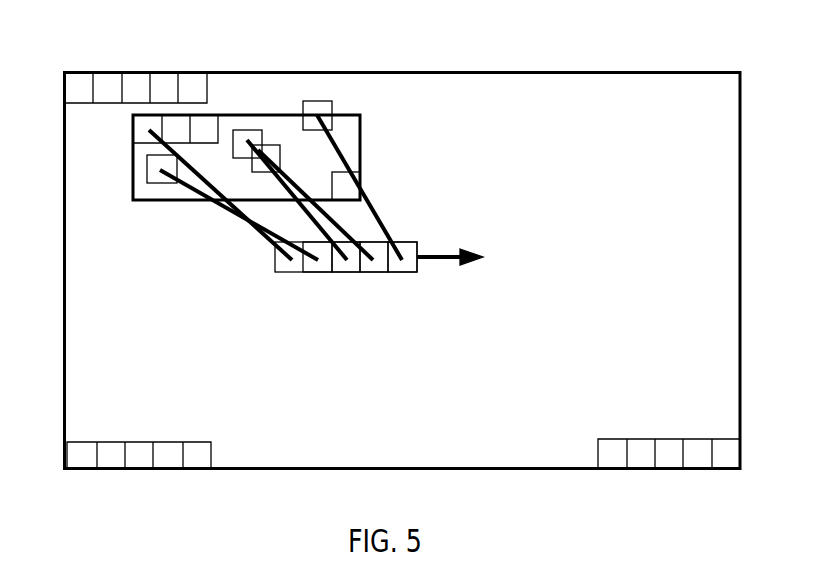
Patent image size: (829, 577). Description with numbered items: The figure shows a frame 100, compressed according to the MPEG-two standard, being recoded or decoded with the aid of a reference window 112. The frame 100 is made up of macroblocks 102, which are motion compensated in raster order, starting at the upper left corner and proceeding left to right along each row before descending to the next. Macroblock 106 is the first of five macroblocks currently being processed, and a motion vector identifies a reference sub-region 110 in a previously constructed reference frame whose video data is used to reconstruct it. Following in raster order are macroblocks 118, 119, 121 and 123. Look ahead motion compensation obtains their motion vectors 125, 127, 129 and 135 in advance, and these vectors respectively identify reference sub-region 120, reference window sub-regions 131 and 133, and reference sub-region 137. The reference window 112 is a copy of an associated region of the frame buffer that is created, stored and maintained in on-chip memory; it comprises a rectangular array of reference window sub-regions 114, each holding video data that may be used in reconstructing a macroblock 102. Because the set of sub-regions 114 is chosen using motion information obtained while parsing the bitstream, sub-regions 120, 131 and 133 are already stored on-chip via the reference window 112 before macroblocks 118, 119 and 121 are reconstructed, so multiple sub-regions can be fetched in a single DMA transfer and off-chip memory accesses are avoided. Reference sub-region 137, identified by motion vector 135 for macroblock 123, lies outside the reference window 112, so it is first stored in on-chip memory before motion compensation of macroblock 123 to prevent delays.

The frame 100 is at (63, 268).
The macroblocks 102 is at (75, 82).
The macroblock 106 is at (379, 301).
The reference sub-region 110 is at (133, 128).
The reference window 112 is at (133, 160).
The reference window sub-regions 114 is at (177, 127).
The macroblock 118 is at (310, 273).
The macroblock 119 is at (340, 273).
The reference sub-region 120 is at (163, 182).
The macroblock 121 is at (380, 273).
The macroblock 123 is at (410, 273).
The motion vector 125 is at (200, 192).
The motion vector 127 is at (358, 240).
The motion vector 129 is at (337, 222).
The reference window sub-region 131 is at (252, 130).
The reference window sub-region 133 is at (267, 145).
The motion vector 135 is at (342, 148).
The reference sub-region 137 is at (318, 101).